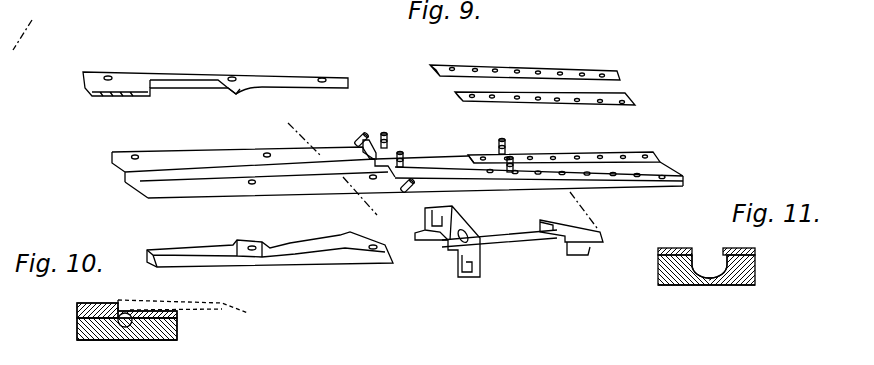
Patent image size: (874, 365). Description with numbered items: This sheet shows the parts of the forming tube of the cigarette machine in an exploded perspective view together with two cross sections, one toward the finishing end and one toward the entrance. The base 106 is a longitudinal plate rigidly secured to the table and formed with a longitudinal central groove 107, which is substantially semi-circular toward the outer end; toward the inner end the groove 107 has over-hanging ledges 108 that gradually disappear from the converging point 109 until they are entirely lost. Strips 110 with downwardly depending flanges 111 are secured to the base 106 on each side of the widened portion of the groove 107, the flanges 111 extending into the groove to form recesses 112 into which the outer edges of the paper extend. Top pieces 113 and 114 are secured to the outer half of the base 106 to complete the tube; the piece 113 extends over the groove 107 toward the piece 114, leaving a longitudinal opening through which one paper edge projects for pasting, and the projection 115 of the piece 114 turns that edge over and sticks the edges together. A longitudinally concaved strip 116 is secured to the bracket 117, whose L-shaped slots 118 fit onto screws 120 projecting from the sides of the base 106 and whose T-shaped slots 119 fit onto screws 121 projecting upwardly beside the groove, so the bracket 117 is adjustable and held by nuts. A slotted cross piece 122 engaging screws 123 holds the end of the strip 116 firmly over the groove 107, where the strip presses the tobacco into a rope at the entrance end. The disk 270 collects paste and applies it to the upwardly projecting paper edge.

In FIG. 9, the base 106 is at (303, 190).
In FIG. 10, the base 106 is at (178, 335).
In FIG. 11, the base 106 is at (743, 285).
In FIG. 9, the groove 107 is at (233, 172).
In FIG. 10, the groove 107 is at (138, 338).
In FIG. 11, the groove 107 is at (705, 268).
In FIG. 9, the over-hanging ledges 108 is at (540, 162).
In FIG. 11, the over-hanging ledges 108 is at (659, 266).
In FIG. 9, the converging point 109 is at (472, 160).
In FIG. 9, the strips 110 is at (628, 82).
In FIG. 9, the flanges 111 is at (455, 94).
In FIG. 11, the recesses 112 is at (723, 257).
In FIG. 9, the top piece 113 is at (320, 263).
In FIG. 10, the top piece 113 is at (178, 317).
In FIG. 9, the top piece 114 is at (184, 74).
In FIG. 10, the top piece 114 is at (77, 310).
In FIG. 9, the projection 115 is at (234, 97).
In FIG. 9, the longitudinally concaved strip 116 is at (515, 246).
In FIG. 9, the bracket 117 is at (477, 277).
In FIG. 9, the L-shaped slots 118 is at (424, 231).
In FIG. 9, the T-shaped slots 119 is at (463, 216).
In FIG. 9, the screws 120 is at (362, 137).
In FIG. 9, the screws 121 is at (402, 152).
In FIG. 9, the cross piece 122 is at (578, 257).
In FIG. 9, the screws 123 is at (530, 147).
In FIG. 10, the disk 270 is at (198, 313).